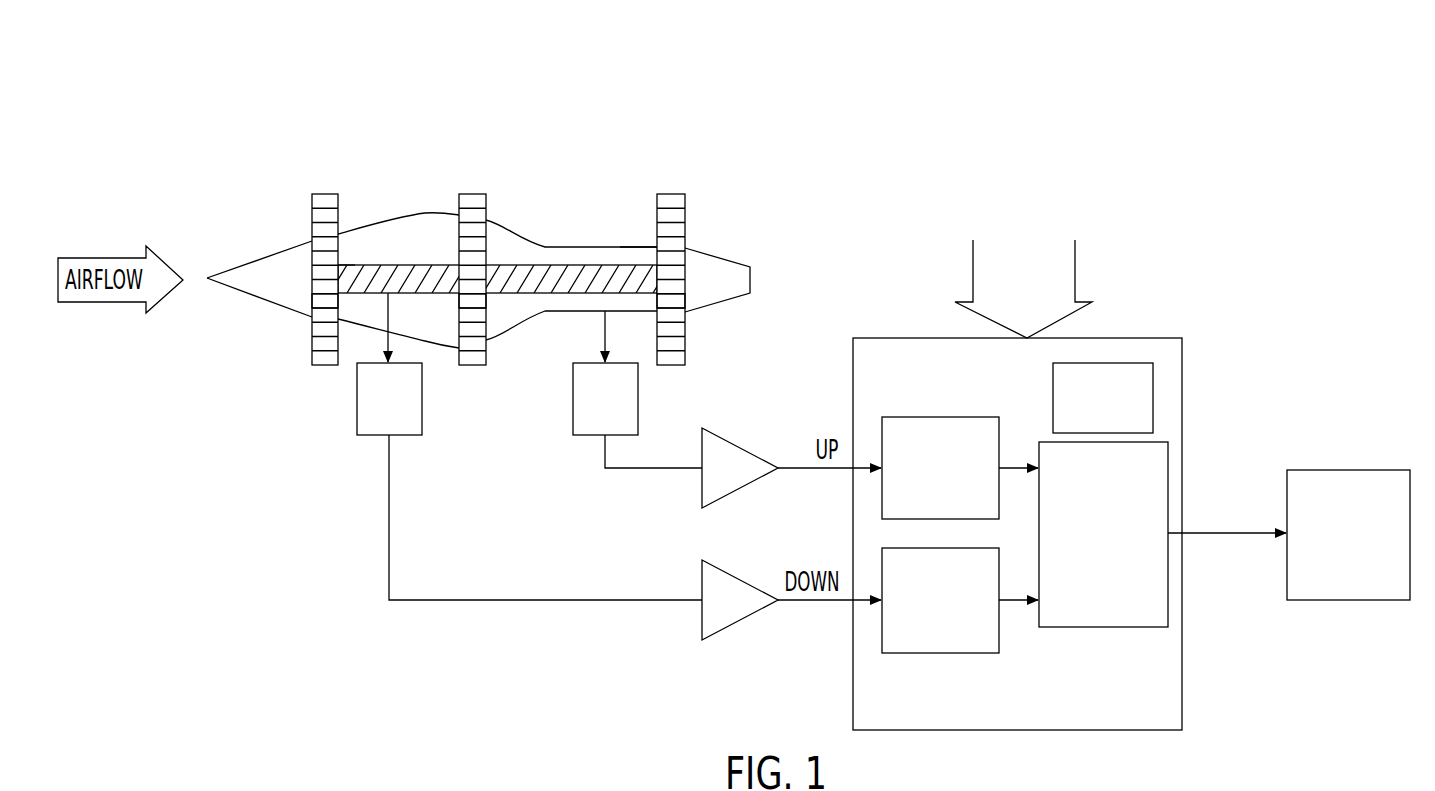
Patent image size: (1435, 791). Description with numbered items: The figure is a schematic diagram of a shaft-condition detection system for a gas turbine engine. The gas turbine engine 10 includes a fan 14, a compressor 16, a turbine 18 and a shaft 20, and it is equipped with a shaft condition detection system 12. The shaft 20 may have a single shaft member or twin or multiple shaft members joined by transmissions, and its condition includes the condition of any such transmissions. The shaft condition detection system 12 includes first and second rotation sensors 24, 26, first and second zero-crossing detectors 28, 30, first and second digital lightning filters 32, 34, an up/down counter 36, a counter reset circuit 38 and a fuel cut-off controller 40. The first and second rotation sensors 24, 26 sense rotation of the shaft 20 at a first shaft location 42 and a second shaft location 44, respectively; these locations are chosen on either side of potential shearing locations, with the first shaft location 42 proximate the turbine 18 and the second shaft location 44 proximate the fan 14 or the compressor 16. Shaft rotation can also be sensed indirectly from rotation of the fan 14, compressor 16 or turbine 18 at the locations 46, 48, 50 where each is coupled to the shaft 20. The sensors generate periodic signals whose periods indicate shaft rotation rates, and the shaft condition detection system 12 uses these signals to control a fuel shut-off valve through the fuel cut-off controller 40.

The gas turbine engine 10 is at (478, 203).
The shaft condition detection system 12 is at (1052, 485).
The fan 14 is at (323, 192).
The compressor 16 is at (473, 192).
The turbine 18 is at (672, 192).
The shaft 20 is at (502, 265).
The first rotation sensor 24 is at (573, 397).
The second rotation sensor 26 is at (422, 397).
The first zero-crossing detector 28 is at (767, 462).
The second zero-crossing detector 30 is at (768, 607).
The first digital lightning filter 32 is at (882, 432).
The second digital lightning filter 34 is at (882, 565).
The up/down counter 36 is at (1168, 488).
The counter reset circuit 38 is at (1153, 402).
The fuel cut-off controller 40 is at (1342, 465).
The first shaft location 42 is at (638, 263).
The second shaft location 44 is at (342, 265).
The fan coupling location 46 is at (322, 295).
The compressor coupling location 48 is at (472, 295).
The turbine coupling location 50 is at (668, 295).